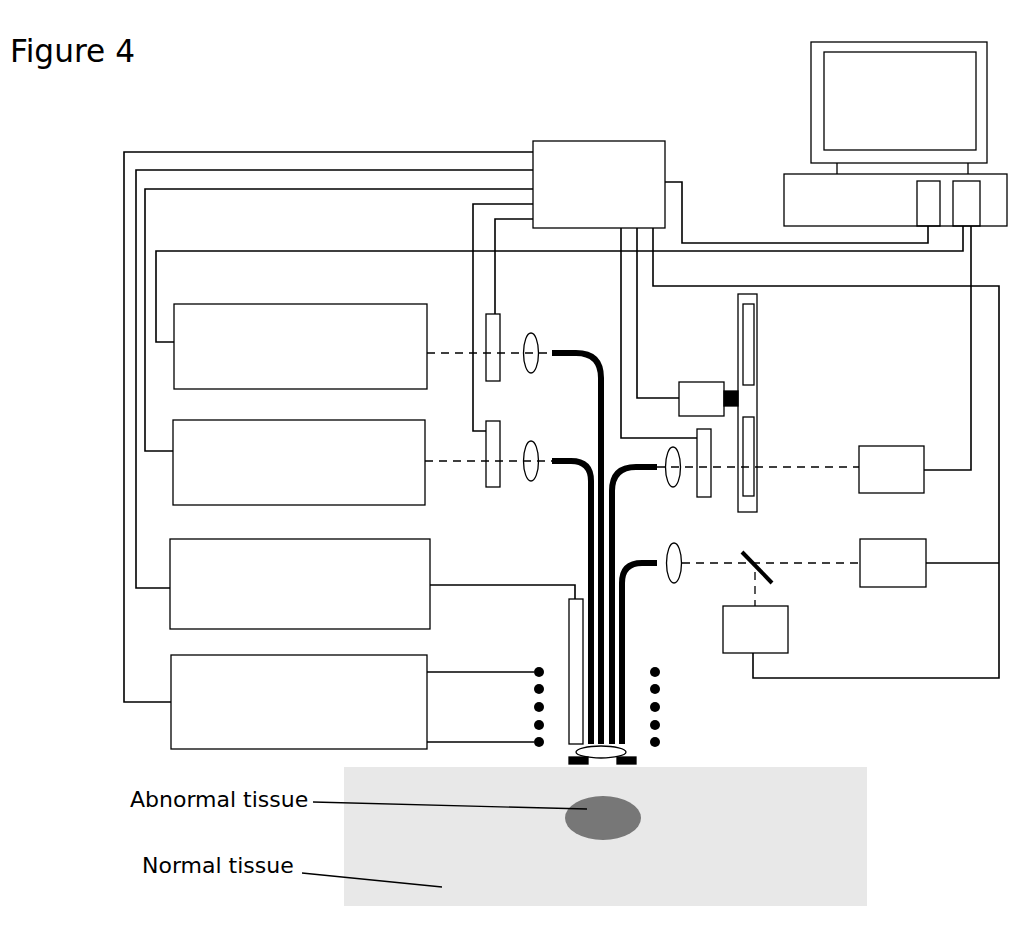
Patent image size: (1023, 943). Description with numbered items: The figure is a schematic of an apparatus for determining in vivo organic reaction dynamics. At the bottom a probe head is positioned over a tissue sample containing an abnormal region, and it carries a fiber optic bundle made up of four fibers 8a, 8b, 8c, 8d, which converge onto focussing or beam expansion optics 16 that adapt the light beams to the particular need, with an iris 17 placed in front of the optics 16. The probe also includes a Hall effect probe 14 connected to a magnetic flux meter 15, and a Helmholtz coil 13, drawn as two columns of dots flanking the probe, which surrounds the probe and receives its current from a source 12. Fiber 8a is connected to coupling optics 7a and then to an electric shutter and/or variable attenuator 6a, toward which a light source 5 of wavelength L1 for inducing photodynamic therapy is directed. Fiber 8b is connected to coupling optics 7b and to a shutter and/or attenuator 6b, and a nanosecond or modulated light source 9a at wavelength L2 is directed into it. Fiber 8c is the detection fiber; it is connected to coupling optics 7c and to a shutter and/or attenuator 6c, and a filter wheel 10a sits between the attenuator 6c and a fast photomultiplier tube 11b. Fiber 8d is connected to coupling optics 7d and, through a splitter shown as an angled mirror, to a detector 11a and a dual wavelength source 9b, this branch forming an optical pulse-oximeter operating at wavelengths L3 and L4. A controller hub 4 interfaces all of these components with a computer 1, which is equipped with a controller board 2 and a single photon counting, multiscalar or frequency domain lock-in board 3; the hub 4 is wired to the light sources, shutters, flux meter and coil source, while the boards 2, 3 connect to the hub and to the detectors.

The computer 1 is at (883, 108).
The controller board 2 is at (895, 200).
The single photon counting board or multiscalar board or frequency domain lock-in bo 3 is at (977, 203).
The controller hub 4 is at (599, 184).
The light source 5 is at (299, 462).
The electric shutter and/or variable attenuator 6a is at (498, 469).
The electric shutter and/or variable attenuator 6b is at (499, 361).
The electric shutter and/or variable attenuator 6c is at (710, 478).
The coupling optics 7a is at (540, 479).
The coupling optics 7b is at (540, 370).
The coupling optics 7c is at (671, 487).
The coupling optics 7d is at (685, 576).
The fiber 8a is at (571, 602).
The fiber 8b is at (576, 548).
The fiber 8c is at (634, 605).
The fiber 8d is at (640, 653).
The nanosecond or modulated light source 9a is at (300, 346).
The dual wavelength source 9b is at (893, 563).
The filter wheel 10a is at (718, 403).
The detector 11a is at (755, 602).
The fast photomultiplier tube 11b is at (891, 469).
The source 12 is at (299, 702).
The Helmholtz coil 13 is at (548, 686).
The Hall effect probe 14 is at (562, 671).
The magnetic flux meter 15 is at (300, 584).
The focussing or beam expansion optics 16 is at (620, 753).
The iris 17 is at (636, 760).